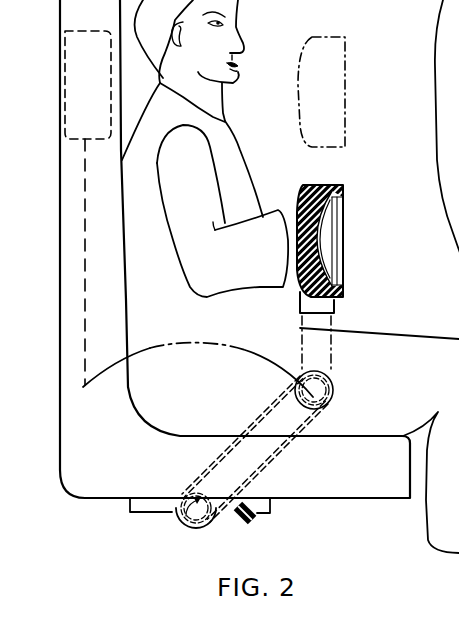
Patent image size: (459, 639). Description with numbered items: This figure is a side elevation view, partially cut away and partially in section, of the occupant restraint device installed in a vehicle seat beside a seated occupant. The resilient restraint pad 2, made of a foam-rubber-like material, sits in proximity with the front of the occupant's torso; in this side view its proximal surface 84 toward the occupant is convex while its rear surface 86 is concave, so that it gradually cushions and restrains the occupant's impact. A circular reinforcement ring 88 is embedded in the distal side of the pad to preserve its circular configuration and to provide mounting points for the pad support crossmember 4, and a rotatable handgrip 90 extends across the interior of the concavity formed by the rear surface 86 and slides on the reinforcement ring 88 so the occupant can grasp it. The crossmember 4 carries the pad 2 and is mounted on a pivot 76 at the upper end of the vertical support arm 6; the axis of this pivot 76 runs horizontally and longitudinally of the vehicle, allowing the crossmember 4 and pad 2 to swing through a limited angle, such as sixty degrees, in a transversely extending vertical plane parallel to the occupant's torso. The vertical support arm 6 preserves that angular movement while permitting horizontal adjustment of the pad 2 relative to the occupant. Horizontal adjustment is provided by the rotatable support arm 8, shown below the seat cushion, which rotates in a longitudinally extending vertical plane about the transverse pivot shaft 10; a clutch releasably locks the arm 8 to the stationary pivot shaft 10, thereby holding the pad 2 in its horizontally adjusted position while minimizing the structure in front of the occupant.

The resilient restraint pad 2 is at (317, 221).
The proximal surface 84 is at (299, 203).
The circular reinforcement ring 88 is at (340, 191).
The rear surface 86 is at (340, 207).
The rotatable handgrip 90 is at (343, 230).
The pad support crossmember 4 is at (308, 306).
The pivot 76 is at (335, 310).
The vertical support arm 6 is at (332, 367).
The rotatable support arm 8 is at (293, 450).
The transverse pivot shaft 10 is at (180, 523).